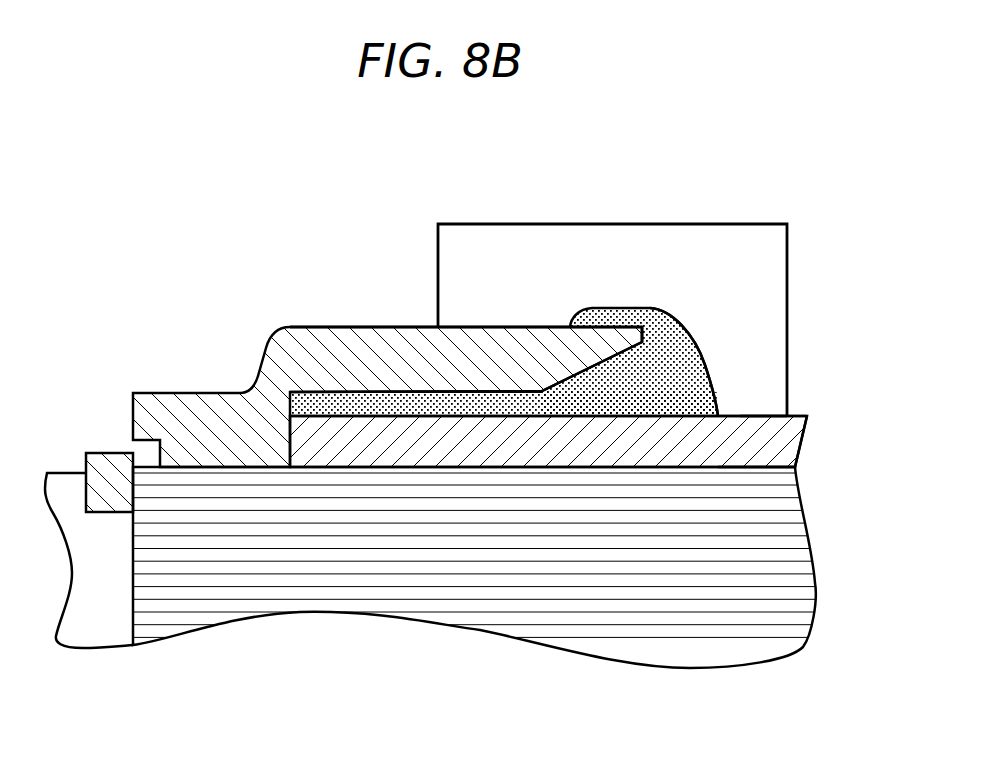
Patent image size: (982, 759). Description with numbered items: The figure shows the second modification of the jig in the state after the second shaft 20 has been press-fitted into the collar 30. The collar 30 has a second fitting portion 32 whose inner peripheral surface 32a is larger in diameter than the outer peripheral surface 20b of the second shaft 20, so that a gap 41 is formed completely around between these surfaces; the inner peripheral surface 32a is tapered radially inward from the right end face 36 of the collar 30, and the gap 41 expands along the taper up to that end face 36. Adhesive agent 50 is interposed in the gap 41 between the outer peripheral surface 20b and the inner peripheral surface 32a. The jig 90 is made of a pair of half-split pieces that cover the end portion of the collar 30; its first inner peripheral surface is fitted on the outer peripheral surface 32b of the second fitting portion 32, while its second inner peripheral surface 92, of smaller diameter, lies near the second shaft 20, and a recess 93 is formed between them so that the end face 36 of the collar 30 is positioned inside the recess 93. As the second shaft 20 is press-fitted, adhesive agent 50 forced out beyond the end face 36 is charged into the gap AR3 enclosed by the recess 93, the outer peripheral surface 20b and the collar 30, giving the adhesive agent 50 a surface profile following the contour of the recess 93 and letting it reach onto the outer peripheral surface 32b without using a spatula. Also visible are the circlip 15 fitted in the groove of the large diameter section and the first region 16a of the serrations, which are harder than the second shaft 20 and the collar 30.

The circlip 15 is at (108, 495).
The first region of serrations 16a is at (782, 463).
The second shaft 20 is at (376, 414).
The outer peripheral surface of the second shaft 20b is at (768, 414).
The collar 30 is at (309, 325).
The second fitting portion 32 is at (417, 340).
The inner peripheral surface of the second fitting portion 32a is at (488, 392).
The outer peripheral surface of the second fitting portion 32b is at (384, 327).
The right end face of the collar 36 is at (652, 338).
The gap 41 is at (410, 405).
The adhesive agent 50 is at (662, 403).
The jig 90 is at (585, 221).
The second inner peripheral surface 92 is at (735, 415).
The recess 93 is at (677, 322).
The gap AR3 is at (678, 380).